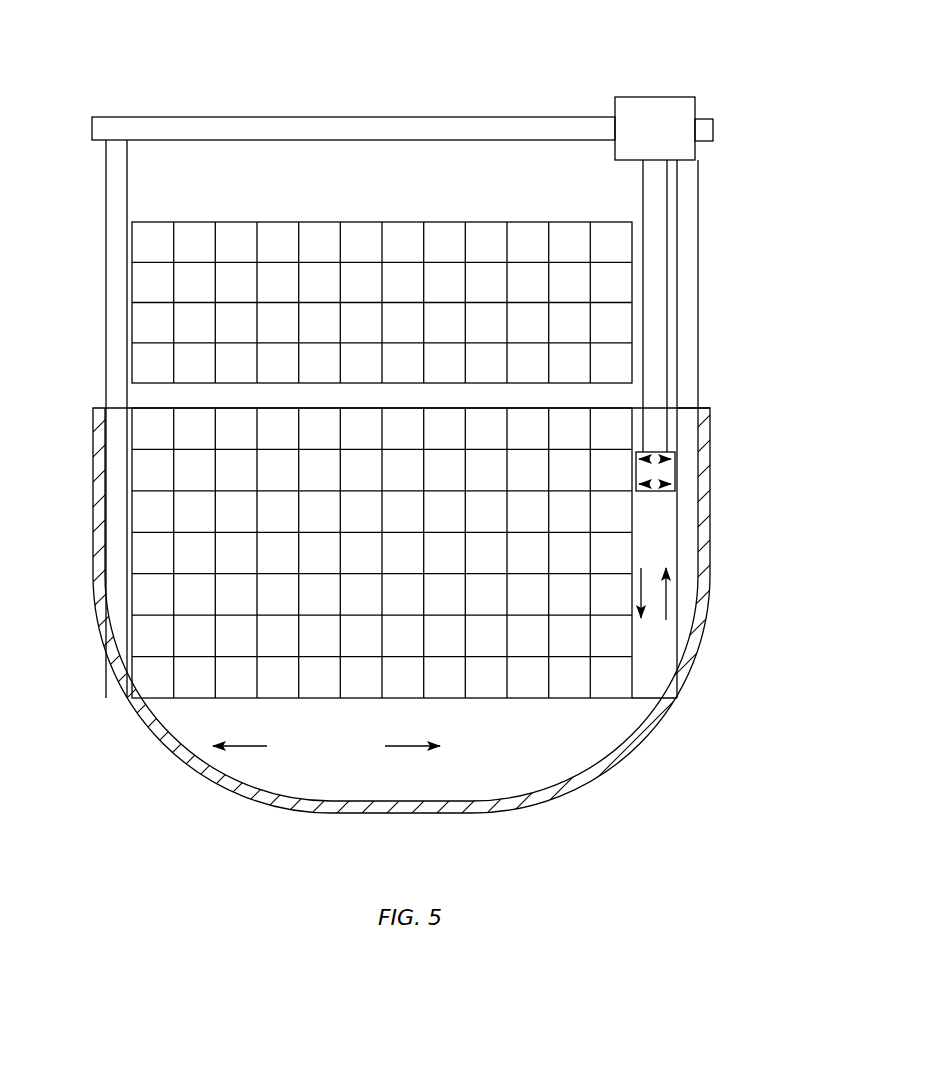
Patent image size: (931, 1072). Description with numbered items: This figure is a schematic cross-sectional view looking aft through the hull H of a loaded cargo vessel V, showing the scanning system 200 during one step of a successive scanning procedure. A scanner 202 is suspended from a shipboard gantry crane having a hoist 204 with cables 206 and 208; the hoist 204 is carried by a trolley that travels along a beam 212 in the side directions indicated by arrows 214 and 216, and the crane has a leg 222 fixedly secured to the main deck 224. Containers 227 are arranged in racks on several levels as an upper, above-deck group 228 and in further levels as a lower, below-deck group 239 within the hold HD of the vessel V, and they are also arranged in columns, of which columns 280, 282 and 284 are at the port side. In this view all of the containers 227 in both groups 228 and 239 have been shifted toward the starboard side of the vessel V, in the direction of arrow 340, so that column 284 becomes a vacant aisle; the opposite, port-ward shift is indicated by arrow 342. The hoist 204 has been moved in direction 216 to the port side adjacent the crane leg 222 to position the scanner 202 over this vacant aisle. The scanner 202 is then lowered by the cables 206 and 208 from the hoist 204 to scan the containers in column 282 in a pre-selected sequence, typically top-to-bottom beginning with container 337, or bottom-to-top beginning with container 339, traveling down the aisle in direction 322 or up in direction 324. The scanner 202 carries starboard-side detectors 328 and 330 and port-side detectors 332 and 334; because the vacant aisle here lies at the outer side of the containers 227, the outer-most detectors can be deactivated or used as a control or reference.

The scanning system 200 is at (160, 72).
The scanner 202 is at (658, 445).
The hoist 204 is at (750, 88).
The cable 206 is at (668, 243).
The cable 208 is at (645, 293).
The beam 212 is at (265, 117).
The arrow 214 is at (613, 88).
The arrow 216 is at (688, 198).
The leg 222 is at (698, 328).
The main deck 224 is at (200, 395).
The container 227 is at (247, 195).
The above-deck group 228 is at (330, 269).
The below-deck group 239 is at (350, 427).
The column 280 is at (566, 702).
The column 282 is at (605, 702).
The column 284 is at (647, 702).
The direction 322 is at (640, 600).
The direction 324 is at (666, 593).
The starboard-side detector 328 is at (648, 485).
The starboard-side detector 330 is at (662, 452).
The port-side detector 332 is at (668, 467).
The port-side detector 334 is at (670, 484).
The container 337 is at (607, 220).
The container 339 is at (632, 668).
The arrow 340 is at (242, 746).
The rightward displacement 342 is at (410, 746).
The hull H is at (150, 738).
The vessel V is at (190, 793).
The hold HD is at (341, 771).